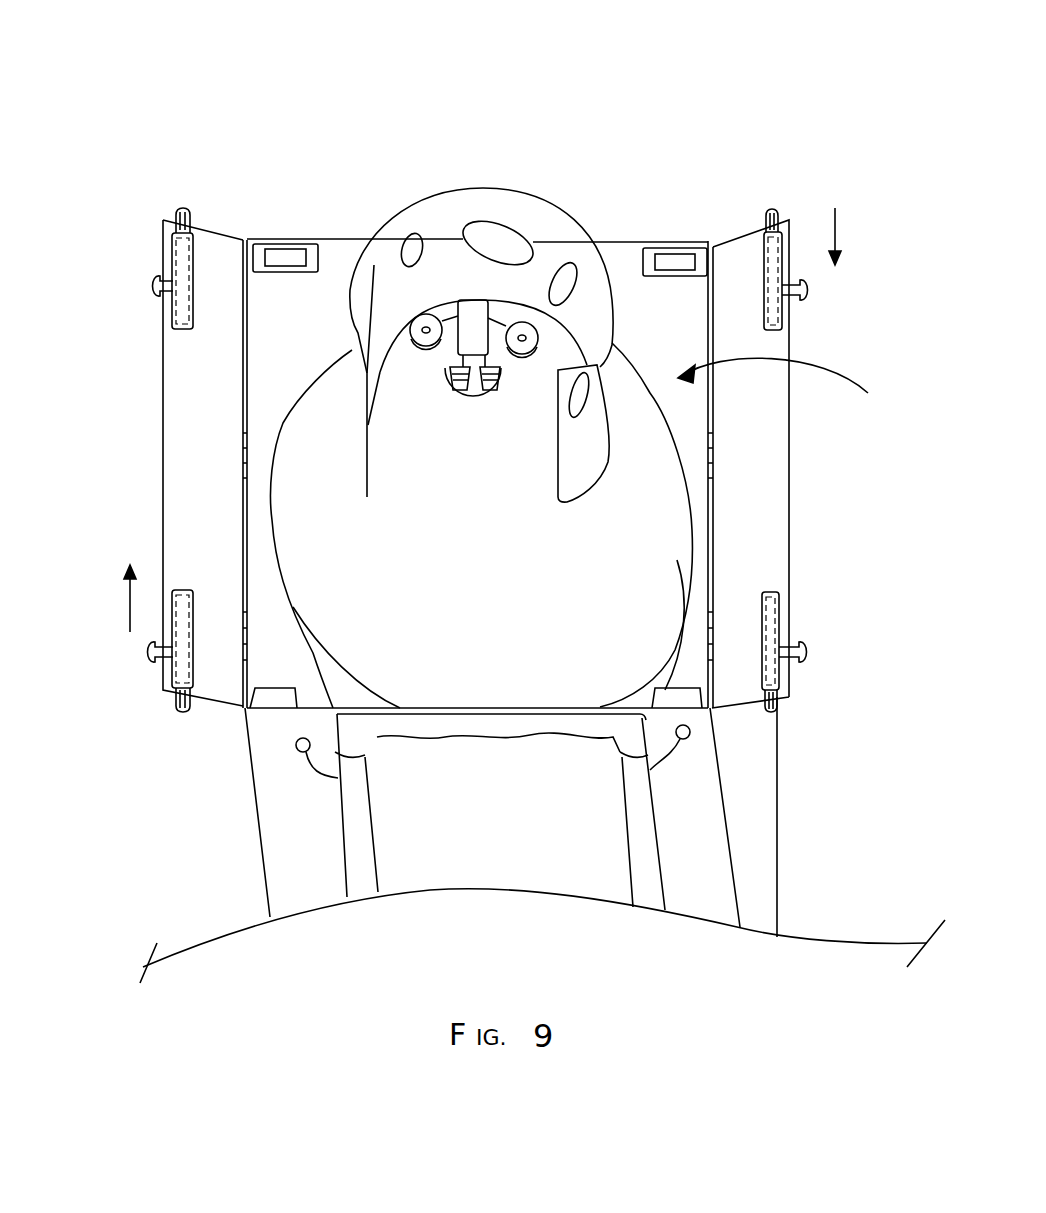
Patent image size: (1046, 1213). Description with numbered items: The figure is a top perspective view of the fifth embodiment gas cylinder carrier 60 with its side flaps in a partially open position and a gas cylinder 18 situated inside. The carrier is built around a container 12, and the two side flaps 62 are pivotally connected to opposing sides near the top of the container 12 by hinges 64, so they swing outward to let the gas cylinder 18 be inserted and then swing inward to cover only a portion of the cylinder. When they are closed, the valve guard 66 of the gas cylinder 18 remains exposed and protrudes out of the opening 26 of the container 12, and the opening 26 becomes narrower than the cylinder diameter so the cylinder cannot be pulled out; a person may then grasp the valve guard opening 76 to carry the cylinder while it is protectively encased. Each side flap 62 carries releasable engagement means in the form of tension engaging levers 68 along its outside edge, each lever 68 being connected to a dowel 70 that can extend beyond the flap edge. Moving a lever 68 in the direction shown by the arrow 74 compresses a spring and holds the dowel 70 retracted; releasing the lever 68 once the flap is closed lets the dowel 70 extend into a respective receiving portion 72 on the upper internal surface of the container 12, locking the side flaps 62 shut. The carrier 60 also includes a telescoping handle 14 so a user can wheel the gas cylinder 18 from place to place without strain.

The container 12 is at (778, 810).
The telescoping handle 14 is at (660, 847).
The gas cylinder 18 is at (650, 548).
The opening 26 is at (797, 394).
The gas cylinder carrier 60 is at (652, 148).
The side flap 62 is at (178, 383).
The hinge 64 is at (713, 443).
The valve guard 66 is at (485, 197).
The tension engaging lever 68 is at (812, 290).
The dowel 70 is at (775, 212).
The receiving portion 72 is at (688, 250).
The arrow 74 is at (125, 592).
The valve guard opening 76 is at (396, 258).